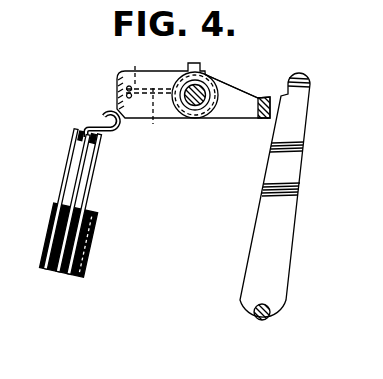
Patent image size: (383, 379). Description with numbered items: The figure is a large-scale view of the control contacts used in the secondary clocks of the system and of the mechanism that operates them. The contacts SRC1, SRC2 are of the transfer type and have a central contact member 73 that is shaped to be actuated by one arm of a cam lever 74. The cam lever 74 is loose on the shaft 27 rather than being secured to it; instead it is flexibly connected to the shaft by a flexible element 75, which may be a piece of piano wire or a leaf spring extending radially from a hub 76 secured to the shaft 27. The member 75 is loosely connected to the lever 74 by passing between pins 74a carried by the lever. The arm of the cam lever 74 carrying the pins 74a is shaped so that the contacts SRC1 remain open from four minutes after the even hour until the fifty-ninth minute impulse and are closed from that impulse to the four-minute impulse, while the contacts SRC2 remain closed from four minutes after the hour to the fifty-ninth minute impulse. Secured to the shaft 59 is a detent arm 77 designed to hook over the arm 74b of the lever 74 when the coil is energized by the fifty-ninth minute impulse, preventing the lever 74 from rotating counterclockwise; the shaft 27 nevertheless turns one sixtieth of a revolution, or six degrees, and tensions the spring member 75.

The cam lever 74 is at (158, 78).
The pins 74a is at (126, 67).
The arm of lever 74b is at (255, 112).
The flexible element 75 is at (147, 117).
The hub 76 is at (213, 78).
The shaft 27 is at (194, 98).
The central contact member 73 is at (103, 126).
The control contact SRC1 is at (87, 128).
The control contact SRC2 is at (98, 152).
The detent arm 77 is at (272, 222).
The shaft 59 is at (257, 313).